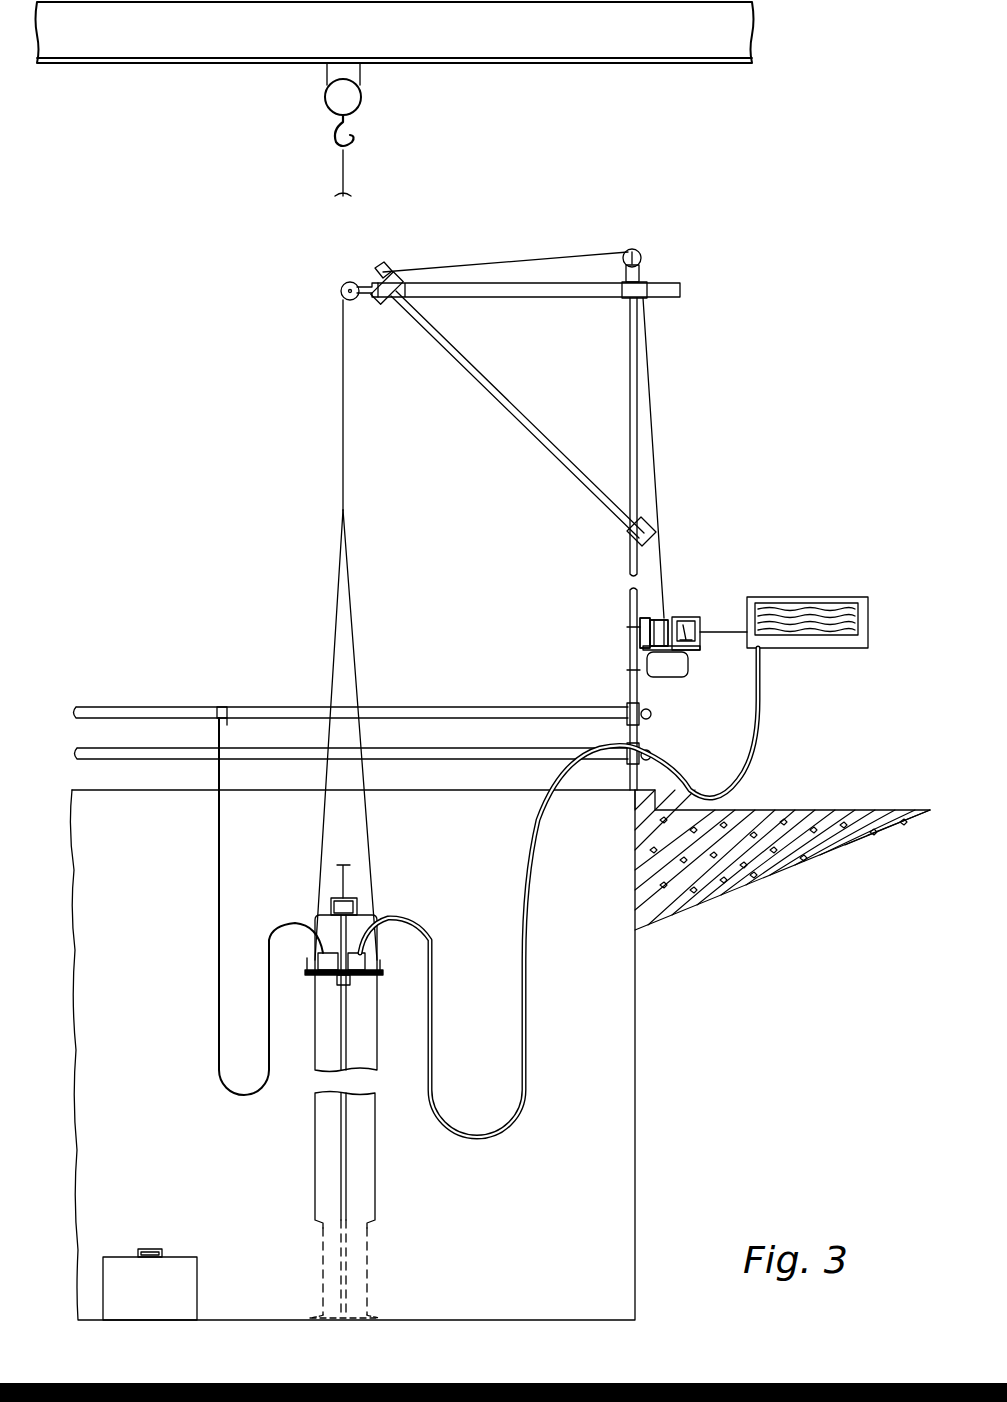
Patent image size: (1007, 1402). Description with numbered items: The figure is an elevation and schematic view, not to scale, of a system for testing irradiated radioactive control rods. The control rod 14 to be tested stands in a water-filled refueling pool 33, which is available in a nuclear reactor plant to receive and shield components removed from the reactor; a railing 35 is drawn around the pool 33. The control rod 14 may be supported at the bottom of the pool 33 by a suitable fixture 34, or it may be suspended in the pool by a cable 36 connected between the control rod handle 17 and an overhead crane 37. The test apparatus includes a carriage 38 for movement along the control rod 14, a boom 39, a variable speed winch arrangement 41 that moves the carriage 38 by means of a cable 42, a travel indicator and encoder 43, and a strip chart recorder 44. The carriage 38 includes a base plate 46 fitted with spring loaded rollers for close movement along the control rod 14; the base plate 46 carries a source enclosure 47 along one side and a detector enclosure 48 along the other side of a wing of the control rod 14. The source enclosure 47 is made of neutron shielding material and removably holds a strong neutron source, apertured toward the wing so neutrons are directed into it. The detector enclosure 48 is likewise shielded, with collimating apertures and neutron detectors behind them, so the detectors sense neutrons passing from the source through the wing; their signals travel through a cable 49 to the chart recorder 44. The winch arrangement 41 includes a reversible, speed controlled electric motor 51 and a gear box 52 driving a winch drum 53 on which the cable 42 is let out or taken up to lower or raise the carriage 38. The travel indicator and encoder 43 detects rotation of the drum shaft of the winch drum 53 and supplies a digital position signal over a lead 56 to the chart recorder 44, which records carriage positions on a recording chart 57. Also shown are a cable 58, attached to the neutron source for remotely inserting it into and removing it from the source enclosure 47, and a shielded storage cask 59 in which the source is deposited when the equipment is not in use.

The control rod 14 is at (300, 1147).
The control rod handle 17 is at (360, 898).
The refueling pool 33 is at (635, 1180).
The fixture 34 is at (381, 1316).
The rails 35 is at (442, 700).
The cable 36 is at (343, 168).
The overhead crane 37 is at (378, 85).
The carriage 38 is at (306, 985).
The boom 39 is at (668, 262).
The variable speed winch arrangement 41 is at (672, 593).
The cable 42 is at (652, 427).
The travel indicator and encoder 43 is at (700, 617).
The strip chart recorder 44 is at (817, 597).
The base plate 46 is at (382, 975).
The source enclosure 47 is at (312, 958).
The detector enclosure 48 is at (365, 958).
The cable 49 is at (533, 932).
The electric motor 51 is at (672, 678).
The gear box 52 is at (643, 650).
The winch drum 53 is at (658, 620).
The lead 56 is at (727, 634).
The recording chart 57 is at (850, 633).
The cable 58 is at (218, 938).
The shielded storage cask 59 is at (197, 1265).